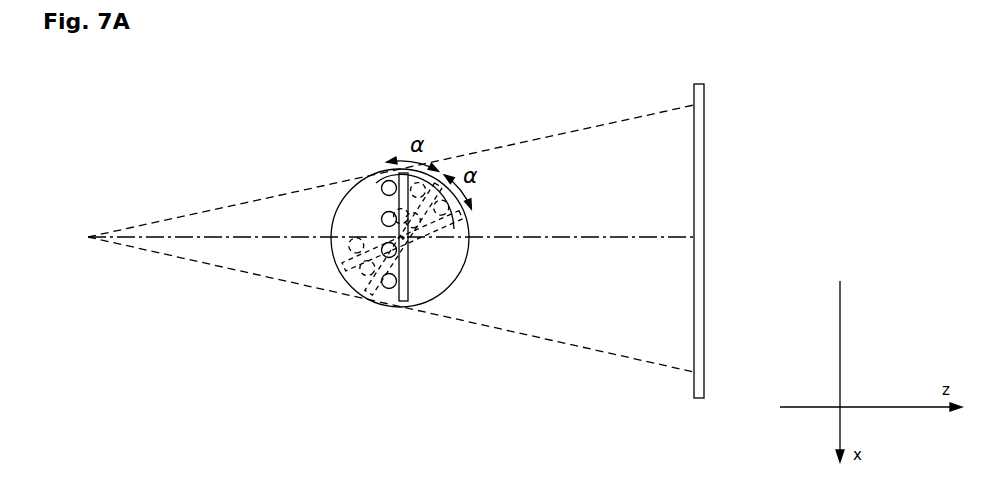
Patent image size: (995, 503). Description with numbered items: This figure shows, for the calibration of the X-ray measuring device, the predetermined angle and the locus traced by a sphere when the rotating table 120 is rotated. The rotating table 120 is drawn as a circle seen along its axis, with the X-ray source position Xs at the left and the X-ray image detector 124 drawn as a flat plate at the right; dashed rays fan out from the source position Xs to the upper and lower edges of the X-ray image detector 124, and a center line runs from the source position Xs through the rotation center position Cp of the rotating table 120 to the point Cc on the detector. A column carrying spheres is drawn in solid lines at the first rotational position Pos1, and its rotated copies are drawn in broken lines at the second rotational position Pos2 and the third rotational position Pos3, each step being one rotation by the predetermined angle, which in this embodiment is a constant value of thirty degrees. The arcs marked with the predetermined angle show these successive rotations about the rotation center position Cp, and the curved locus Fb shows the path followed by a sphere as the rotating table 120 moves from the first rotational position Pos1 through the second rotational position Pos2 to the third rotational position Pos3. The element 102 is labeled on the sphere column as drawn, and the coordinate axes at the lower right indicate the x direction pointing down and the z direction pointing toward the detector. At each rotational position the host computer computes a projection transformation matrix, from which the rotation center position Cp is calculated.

The rotating table 120 is at (343, 223).
The filter plate 102 is at (405, 287).
The X-ray image detector 124 is at (703, 110).
The absolute position of the X-ray source Xs is at (86, 238).
The locus of the sphere Fb is at (377, 181).
The rotation center position Cp is at (403, 238).
The detector center Cc is at (697, 237).
The first rotational position Pos1 is at (385, 158).
The second rotational position Pos2 is at (447, 166).
The third rotational position Pos3 is at (464, 212).